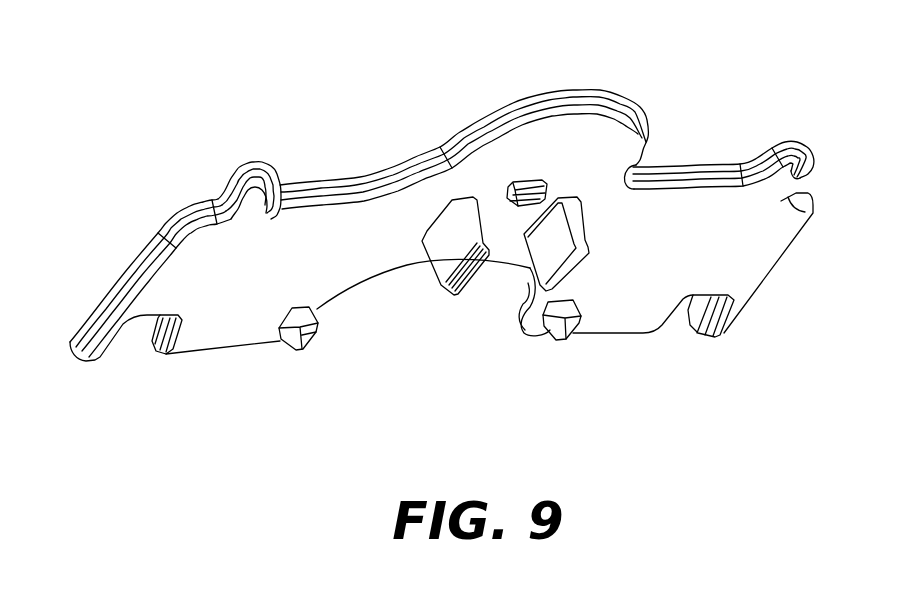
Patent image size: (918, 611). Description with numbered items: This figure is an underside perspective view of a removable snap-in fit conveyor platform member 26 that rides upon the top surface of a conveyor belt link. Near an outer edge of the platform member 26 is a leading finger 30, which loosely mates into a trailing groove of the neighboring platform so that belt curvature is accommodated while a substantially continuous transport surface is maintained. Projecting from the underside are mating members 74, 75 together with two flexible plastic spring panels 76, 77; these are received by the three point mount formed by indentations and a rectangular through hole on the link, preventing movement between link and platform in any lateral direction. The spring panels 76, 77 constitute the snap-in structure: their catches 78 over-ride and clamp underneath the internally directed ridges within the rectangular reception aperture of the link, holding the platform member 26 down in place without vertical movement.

The platform member 26 is at (538, 102).
The leading finger 30 is at (248, 165).
The mating member 74 is at (298, 350).
The mating member 75 is at (604, 334).
The flexible plastic spring panel 76 is at (450, 243).
The flexible plastic spring panel 77 is at (540, 250).
The catch 78 is at (448, 292).